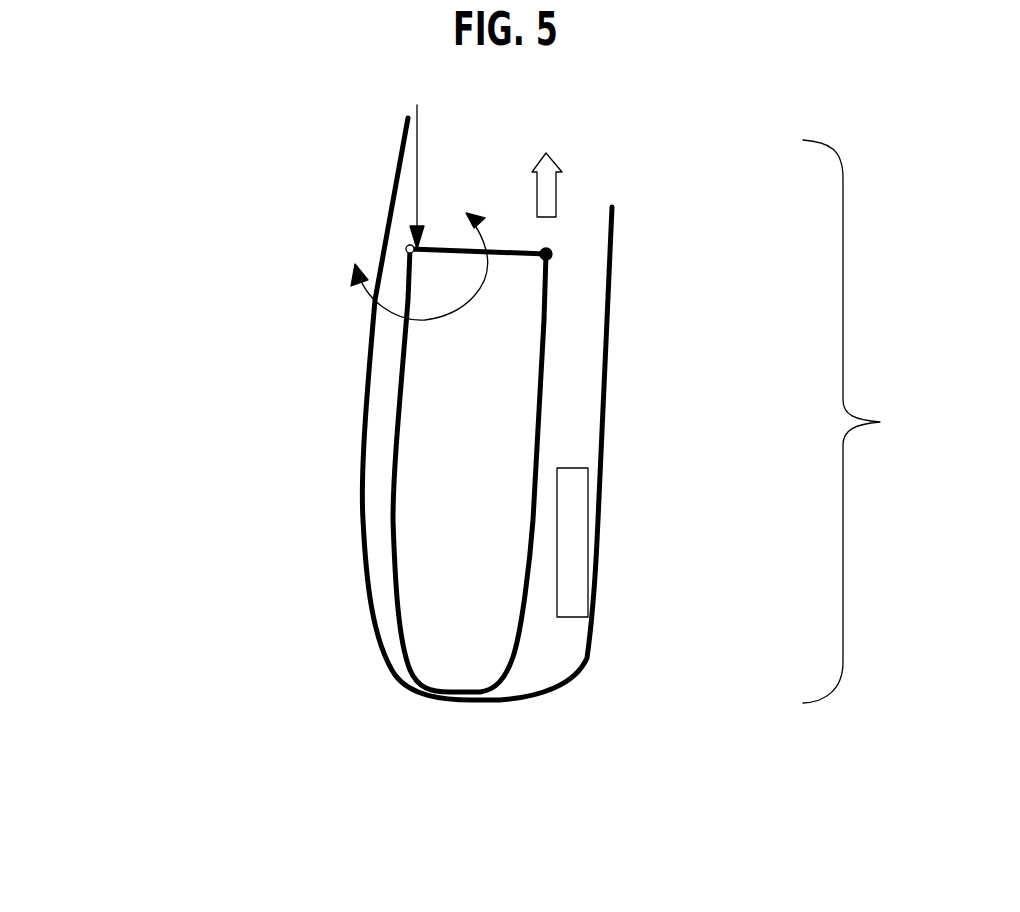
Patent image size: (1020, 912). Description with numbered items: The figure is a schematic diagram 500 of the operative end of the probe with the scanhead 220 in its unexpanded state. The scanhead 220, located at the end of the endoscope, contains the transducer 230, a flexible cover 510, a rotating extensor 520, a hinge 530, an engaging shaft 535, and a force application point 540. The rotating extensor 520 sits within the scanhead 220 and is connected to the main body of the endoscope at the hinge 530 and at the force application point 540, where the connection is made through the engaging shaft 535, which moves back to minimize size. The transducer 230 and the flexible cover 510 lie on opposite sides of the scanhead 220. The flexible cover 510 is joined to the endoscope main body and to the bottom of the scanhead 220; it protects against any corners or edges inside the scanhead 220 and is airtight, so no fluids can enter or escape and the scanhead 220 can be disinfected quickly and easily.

The schematic diagram 500 is at (255, 800).
The flexible cover 510 is at (360, 523).
The rotating extensor 520 is at (476, 349).
The hinge 530 is at (406, 249).
The engaging shaft 535 is at (537, 188).
The force application point 540 is at (565, 254).
The scanhead 220 is at (565, 402).
The transducer 230 is at (581, 554).